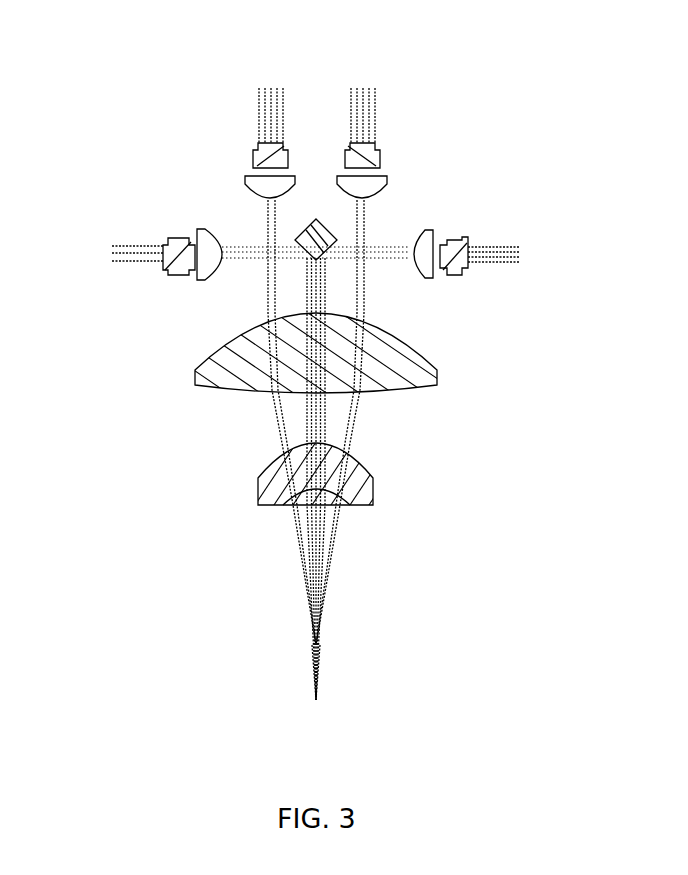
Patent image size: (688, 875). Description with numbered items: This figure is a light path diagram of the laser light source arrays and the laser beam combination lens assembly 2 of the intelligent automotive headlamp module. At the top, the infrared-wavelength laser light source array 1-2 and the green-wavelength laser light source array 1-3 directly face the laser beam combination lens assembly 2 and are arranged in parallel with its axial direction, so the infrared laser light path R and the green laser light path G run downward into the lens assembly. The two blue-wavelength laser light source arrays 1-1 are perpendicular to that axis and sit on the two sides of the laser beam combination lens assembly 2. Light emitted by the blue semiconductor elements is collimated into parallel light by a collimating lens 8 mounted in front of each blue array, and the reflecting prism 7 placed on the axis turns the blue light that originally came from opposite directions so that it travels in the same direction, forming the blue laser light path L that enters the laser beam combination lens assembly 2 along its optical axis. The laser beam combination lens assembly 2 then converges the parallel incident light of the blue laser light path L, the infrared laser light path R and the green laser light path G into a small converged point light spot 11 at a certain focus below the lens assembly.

The blue-wavelength laser light source array 1-1 is at (178, 243).
The infrared-wavelength laser light source array 1-2 is at (268, 151).
The green-wavelength laser light source array 1-3 is at (367, 149).
The reflecting prism 7 is at (318, 216).
The collimating lens 8 is at (429, 268).
The laser beam combination lens assembly 2 is at (269, 480).
The blue laser light path L is at (323, 407).
The green laser light path G is at (350, 438).
The infrared laser light path R is at (277, 431).
The converged point light spot 11 is at (277, 645).